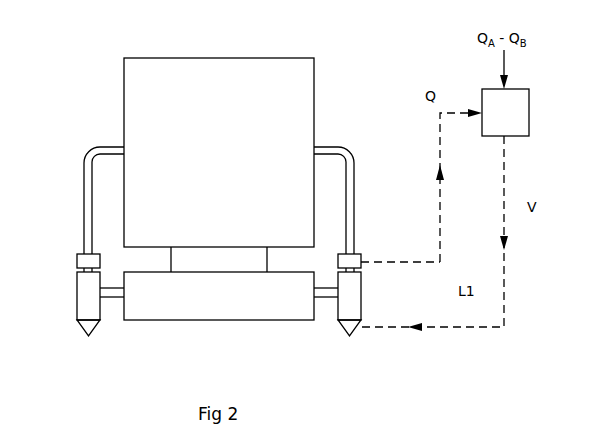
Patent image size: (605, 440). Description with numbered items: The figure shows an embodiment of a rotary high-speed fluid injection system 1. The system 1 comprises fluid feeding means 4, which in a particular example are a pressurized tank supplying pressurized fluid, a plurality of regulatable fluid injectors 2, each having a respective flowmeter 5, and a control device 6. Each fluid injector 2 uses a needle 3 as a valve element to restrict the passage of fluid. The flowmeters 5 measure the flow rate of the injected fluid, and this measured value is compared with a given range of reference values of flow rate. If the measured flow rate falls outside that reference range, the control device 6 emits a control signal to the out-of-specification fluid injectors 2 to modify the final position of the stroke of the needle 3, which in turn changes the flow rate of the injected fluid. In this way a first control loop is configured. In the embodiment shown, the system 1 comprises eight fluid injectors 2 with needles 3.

The rotary fluid injection system 1 is at (206, 196).
The fluid injector 2 is at (83, 290).
The needle 3 is at (82, 325).
The fluid feeding means 4 is at (234, 70).
The flowmeter 5 is at (80, 258).
The control device 6 is at (505, 112).